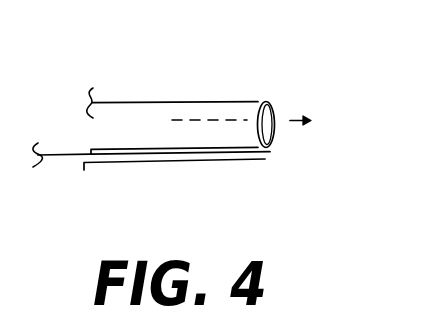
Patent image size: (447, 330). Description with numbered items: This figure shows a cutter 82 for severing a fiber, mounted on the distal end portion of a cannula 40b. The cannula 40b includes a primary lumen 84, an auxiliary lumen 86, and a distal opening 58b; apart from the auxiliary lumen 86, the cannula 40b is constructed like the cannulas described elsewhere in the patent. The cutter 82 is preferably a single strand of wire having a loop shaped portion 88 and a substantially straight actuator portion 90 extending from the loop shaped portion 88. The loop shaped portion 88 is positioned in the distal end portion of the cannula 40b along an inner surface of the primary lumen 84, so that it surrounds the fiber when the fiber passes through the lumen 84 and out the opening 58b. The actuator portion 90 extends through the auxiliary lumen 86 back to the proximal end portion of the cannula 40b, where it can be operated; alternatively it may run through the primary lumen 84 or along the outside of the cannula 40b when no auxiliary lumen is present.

The cannula 40b is at (136, 103).
The cutter 82 is at (283, 79).
The primary lumen 84 is at (172, 115).
The loop shaped portion 88 is at (277, 123).
The distal opening 58b is at (274, 149).
The actuator portion 90 is at (57, 155).
The auxiliary lumen 86 is at (195, 161).